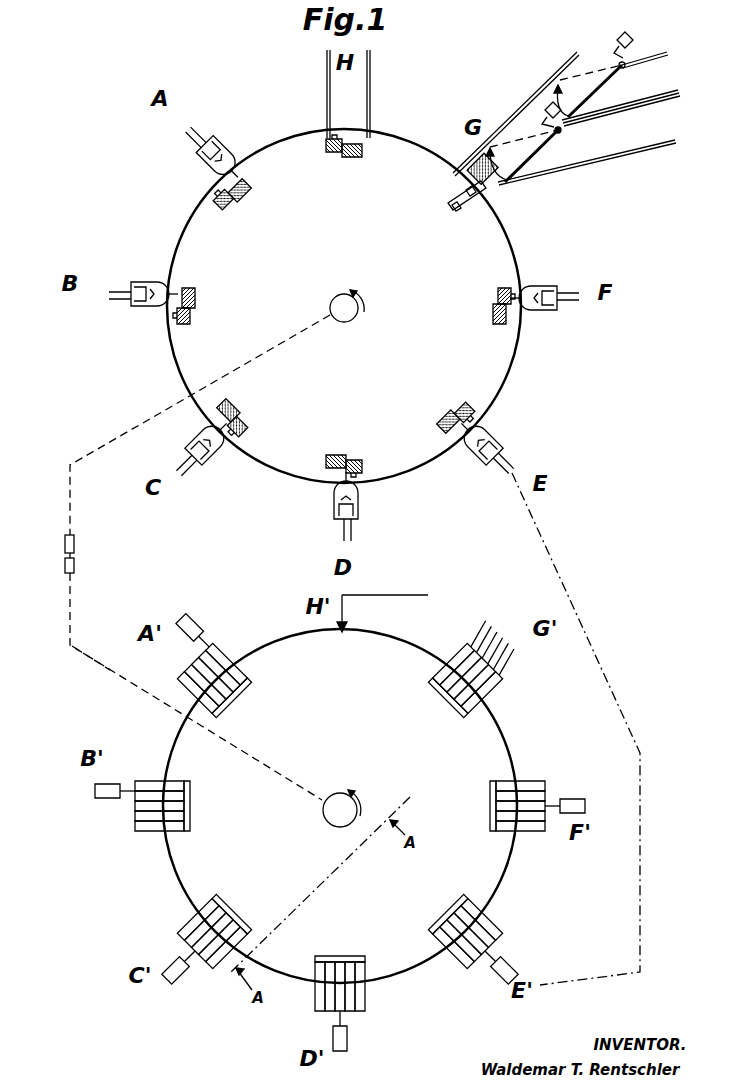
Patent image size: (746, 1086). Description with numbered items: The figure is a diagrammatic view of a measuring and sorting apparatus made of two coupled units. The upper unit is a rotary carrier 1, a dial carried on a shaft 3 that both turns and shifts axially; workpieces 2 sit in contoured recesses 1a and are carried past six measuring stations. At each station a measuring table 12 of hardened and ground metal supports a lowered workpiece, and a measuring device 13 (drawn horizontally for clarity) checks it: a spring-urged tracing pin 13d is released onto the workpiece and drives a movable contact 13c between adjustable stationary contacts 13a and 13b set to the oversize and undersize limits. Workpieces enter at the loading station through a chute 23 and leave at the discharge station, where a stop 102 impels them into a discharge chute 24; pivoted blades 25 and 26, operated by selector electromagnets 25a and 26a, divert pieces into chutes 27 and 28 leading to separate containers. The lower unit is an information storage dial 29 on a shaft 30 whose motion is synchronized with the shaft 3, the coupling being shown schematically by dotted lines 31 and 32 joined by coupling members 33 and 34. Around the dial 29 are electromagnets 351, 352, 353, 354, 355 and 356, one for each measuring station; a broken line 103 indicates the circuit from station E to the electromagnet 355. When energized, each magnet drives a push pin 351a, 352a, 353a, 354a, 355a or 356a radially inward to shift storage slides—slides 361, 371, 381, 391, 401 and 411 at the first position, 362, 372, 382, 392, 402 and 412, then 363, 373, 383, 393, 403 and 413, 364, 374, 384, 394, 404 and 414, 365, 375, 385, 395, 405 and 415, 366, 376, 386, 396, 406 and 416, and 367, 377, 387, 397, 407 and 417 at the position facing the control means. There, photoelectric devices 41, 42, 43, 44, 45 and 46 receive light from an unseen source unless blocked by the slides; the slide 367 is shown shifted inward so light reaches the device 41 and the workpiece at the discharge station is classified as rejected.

The rotary carrier 1 is at (496, 242).
The recesses 1a is at (447, 200).
The workpieces 2 is at (235, 200).
The shaft 3 is at (334, 320).
The measuring tables 12 is at (248, 183).
The measuring devices 13 is at (208, 160).
The adjustable stationary contact 13a is at (207, 135).
The adjustable stationary contact 13b is at (232, 162).
The movable contact 13c is at (225, 150).
The tracing pin 13d is at (218, 180).
The chute 23 is at (360, 98).
The discharge chute 24 is at (543, 104).
The blade 25 is at (545, 145).
The electromagnet 25a is at (550, 107).
The blade 26 is at (598, 87).
The electromagnet 26a is at (618, 38).
The chute 27 is at (640, 135).
The chute 28 is at (647, 75).
The dial 29 is at (498, 733).
The shaft 30 is at (330, 815).
The dotted line 31 is at (95, 665).
The dotted line 32 is at (75, 452).
The coupling member 33 is at (64, 565).
The coupling member 34 is at (64, 542).
The photoelectric device 41 is at (508, 682).
The photoelectric device 42 is at (510, 670).
The photoelectric device 43 is at (495, 650).
The photoelectric device 44 is at (484, 640).
The photoelectric device 45 is at (474, 645).
The photoelectric device 46 is at (468, 648).
The stop 102 is at (455, 214).
The broken line 103 is at (620, 632).
The electromagnet 351 is at (196, 622).
The push pin 351a is at (210, 645).
The electromagnet 352 is at (96, 795).
The push pin 352a is at (128, 793).
The electromagnet 353 is at (168, 978).
The push pin 353a is at (187, 960).
The electromagnet 354 is at (348, 1038).
The push pin 354a is at (343, 1020).
The electromagnet 355 is at (514, 968).
The push pin 355a is at (492, 958).
The electromagnet 356 is at (578, 800).
The push pin 356a is at (553, 800).
The slide 361 is at (232, 668).
The slide 371 is at (225, 675).
The slide 381 is at (218, 682).
The slide 391 is at (210, 690).
The slide 401 is at (203, 697).
The slide 411 is at (225, 705).
The slide 362 is at (175, 785).
The slide 372 is at (188, 795).
The slide 382 is at (188, 805).
The slide 392 is at (188, 815).
The slide 402 is at (188, 825).
The slide 412 is at (190, 815).
The slide 363 is at (202, 912).
The slide 373 is at (210, 920).
The slide 383 is at (218, 928).
The slide 393 is at (225, 936).
The slide 403 is at (232, 945).
The slide 413 is at (238, 918).
The slide 364 is at (318, 968).
The slide 374 is at (328, 968).
The slide 384 is at (340, 968).
The slide 394 is at (350, 968).
The slide 404 is at (360, 970).
The slide 414 is at (355, 962).
The slide 365 is at (450, 945).
The slide 375 is at (457, 938).
The slide 385 is at (463, 930).
The slide 395 is at (470, 922).
The slide 405 is at (478, 915).
The slide 415 is at (452, 915).
The slide 366 is at (502, 828).
The slide 376 is at (500, 816).
The slide 386 is at (500, 806).
The slide 396 is at (500, 796).
The slide 406 is at (500, 786).
The slide 416 is at (496, 790).
The slide 367 is at (482, 700).
The slide 377 is at (472, 689).
The slide 387 is at (465, 682).
The slide 397 is at (458, 675).
The slide 407 is at (452, 668).
The slide 417 is at (448, 668).